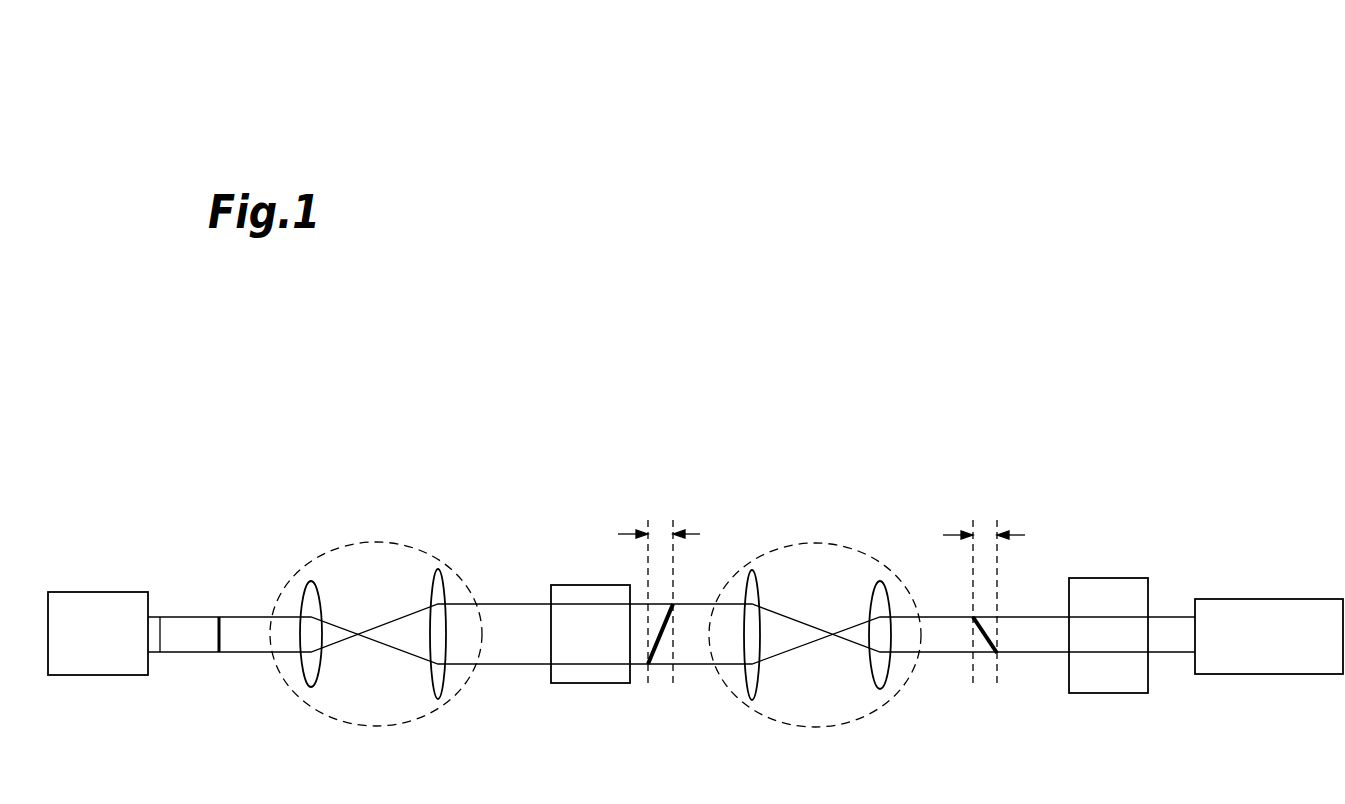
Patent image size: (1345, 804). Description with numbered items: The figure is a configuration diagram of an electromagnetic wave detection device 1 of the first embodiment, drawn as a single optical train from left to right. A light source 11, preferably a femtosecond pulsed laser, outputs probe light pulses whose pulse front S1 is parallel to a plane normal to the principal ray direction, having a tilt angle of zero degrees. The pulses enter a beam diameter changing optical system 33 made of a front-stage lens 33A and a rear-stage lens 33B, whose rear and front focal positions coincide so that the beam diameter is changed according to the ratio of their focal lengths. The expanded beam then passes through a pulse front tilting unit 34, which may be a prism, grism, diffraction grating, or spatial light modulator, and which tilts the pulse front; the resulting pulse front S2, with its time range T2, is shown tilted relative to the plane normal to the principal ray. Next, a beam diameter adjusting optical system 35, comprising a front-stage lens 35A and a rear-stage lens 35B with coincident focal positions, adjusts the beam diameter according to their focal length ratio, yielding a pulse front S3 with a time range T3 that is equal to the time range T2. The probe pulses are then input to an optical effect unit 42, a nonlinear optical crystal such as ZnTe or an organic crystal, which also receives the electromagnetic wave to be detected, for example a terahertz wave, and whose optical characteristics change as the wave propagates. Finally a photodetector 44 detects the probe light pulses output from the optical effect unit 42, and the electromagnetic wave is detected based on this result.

The electromagnetic wave detection device 1 is at (1060, 413).
The light source 11 is at (90, 591).
The pulse front S1 is at (227, 641).
The beam diameter changing optical system 33 is at (376, 542).
The lens 33A is at (305, 586).
The lens 33B is at (446, 588).
The pulse front tilting unit 34 is at (590, 585).
The time range T2 is at (659, 586).
The pulse front S2 is at (665, 645).
The beam diameter adjusting optical system 35 is at (814, 544).
The lens 35A is at (747, 588).
The lens 35B is at (888, 588).
The time range T3 is at (984, 588).
The pulse front S3 is at (989, 643).
The optical effect unit 42 is at (1110, 578).
The photodetector 44 is at (1295, 599).